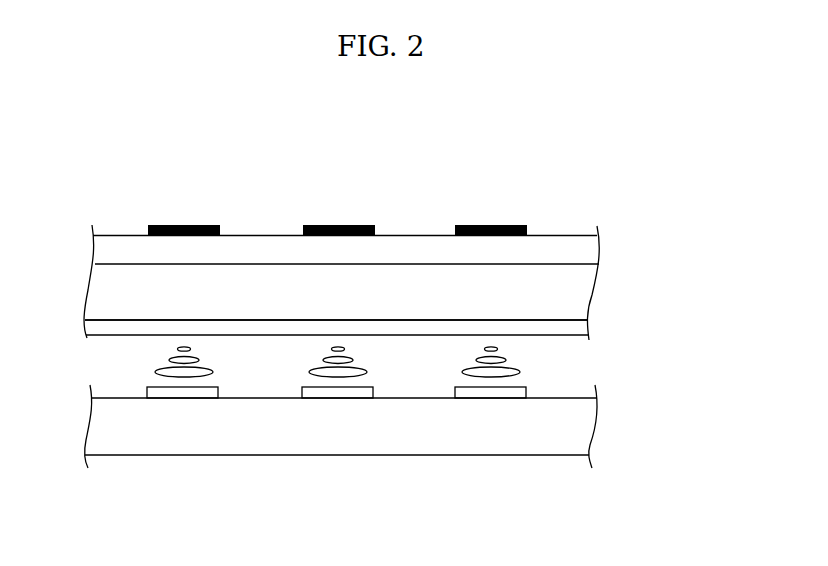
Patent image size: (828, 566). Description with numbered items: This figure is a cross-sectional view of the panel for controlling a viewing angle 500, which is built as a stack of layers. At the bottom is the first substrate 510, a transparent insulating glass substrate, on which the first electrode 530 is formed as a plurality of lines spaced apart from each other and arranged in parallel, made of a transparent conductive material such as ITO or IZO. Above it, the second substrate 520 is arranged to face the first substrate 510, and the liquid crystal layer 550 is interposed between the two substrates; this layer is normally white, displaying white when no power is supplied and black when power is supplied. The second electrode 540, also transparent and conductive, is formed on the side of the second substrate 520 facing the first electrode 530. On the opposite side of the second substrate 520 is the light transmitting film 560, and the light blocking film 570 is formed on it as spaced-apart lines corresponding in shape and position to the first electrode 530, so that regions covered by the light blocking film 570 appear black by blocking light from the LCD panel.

The panel for controlling a viewing angle 500 is at (357, 193).
The first substrate 510 is at (572, 435).
The second substrate 520 is at (578, 287).
The first electrode 530 is at (485, 393).
The second electrode 540 is at (578, 328).
The liquid crystal layer 550 is at (517, 368).
The light transmitting film 560 is at (560, 240).
The light blocking film 570 is at (485, 223).